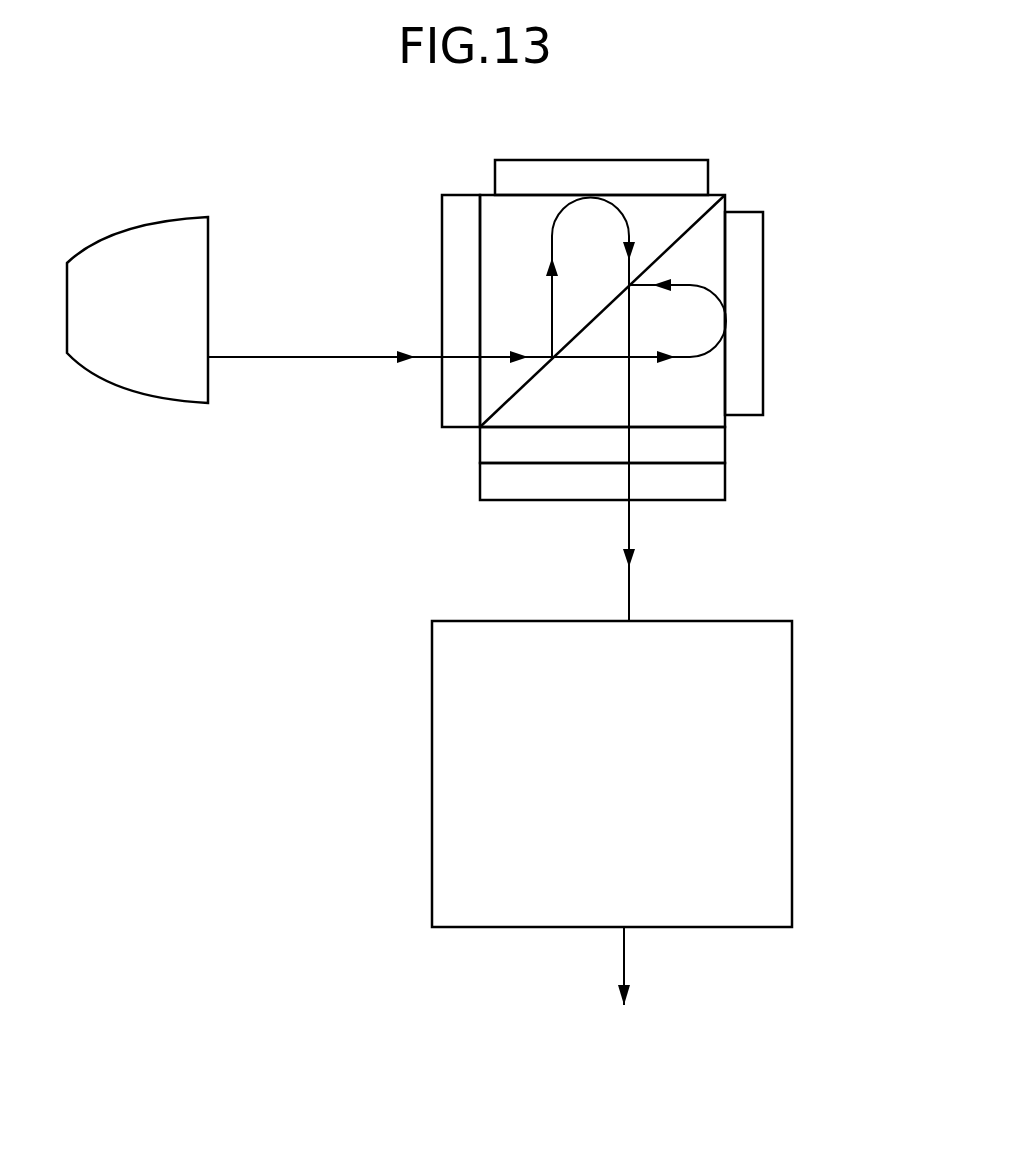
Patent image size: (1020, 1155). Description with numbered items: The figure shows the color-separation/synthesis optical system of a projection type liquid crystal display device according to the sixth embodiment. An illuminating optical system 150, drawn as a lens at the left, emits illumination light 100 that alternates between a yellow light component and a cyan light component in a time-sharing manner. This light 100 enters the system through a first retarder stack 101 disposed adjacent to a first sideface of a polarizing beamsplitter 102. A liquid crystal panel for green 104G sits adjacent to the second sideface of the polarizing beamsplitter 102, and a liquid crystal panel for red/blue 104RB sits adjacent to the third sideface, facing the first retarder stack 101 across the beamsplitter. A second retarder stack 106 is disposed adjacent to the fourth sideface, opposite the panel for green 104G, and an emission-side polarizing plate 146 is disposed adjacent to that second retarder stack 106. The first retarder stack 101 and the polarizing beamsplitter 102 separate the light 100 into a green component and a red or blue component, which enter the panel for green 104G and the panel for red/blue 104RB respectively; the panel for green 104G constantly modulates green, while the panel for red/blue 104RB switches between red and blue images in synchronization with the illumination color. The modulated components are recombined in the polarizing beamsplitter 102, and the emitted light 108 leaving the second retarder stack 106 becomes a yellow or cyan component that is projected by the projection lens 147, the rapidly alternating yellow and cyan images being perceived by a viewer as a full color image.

The illumination light 100 is at (327, 360).
The first retarder stack 101 is at (442, 208).
The polarizing beamsplitter 102 is at (490, 220).
The liquid crystal panel for green 104G is at (603, 173).
The liquid crystal panel for red/blue 104RB is at (750, 222).
The second retarder stack 106 is at (487, 448).
The emitted light 108 is at (629, 533).
The emission-side polarizing plate 146 is at (708, 490).
The projection lens 147 is at (448, 744).
The illuminating optical system 150 is at (160, 378).